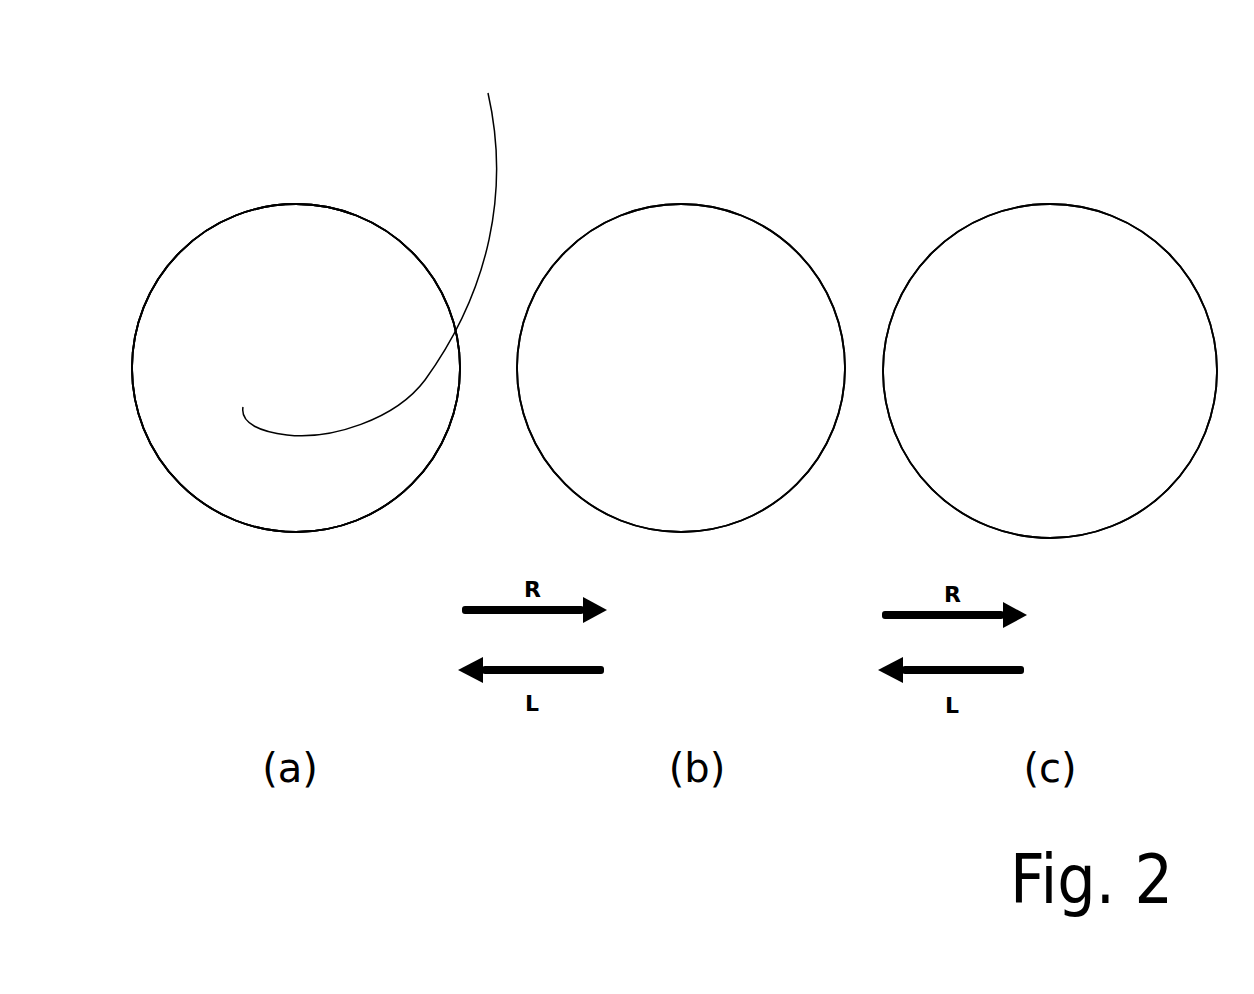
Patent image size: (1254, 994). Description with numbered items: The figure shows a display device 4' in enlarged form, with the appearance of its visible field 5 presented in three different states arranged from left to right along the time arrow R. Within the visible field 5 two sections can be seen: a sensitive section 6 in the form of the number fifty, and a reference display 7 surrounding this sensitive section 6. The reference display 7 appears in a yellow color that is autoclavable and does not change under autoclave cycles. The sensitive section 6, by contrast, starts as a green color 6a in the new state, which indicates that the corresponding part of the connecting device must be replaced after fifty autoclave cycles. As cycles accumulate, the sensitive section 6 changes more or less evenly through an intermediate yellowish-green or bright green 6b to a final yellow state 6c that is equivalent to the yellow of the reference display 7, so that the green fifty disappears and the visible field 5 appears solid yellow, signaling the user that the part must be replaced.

The display device 4' is at (290, 317).
The visible field 5 is at (205, 422).
The sensitive section 6 is at (301, 233).
The green color 6a is at (370, 287).
The bright green 6b is at (681, 280).
The yellow state 6c is at (1050, 289).
The reference display 7 is at (368, 450).